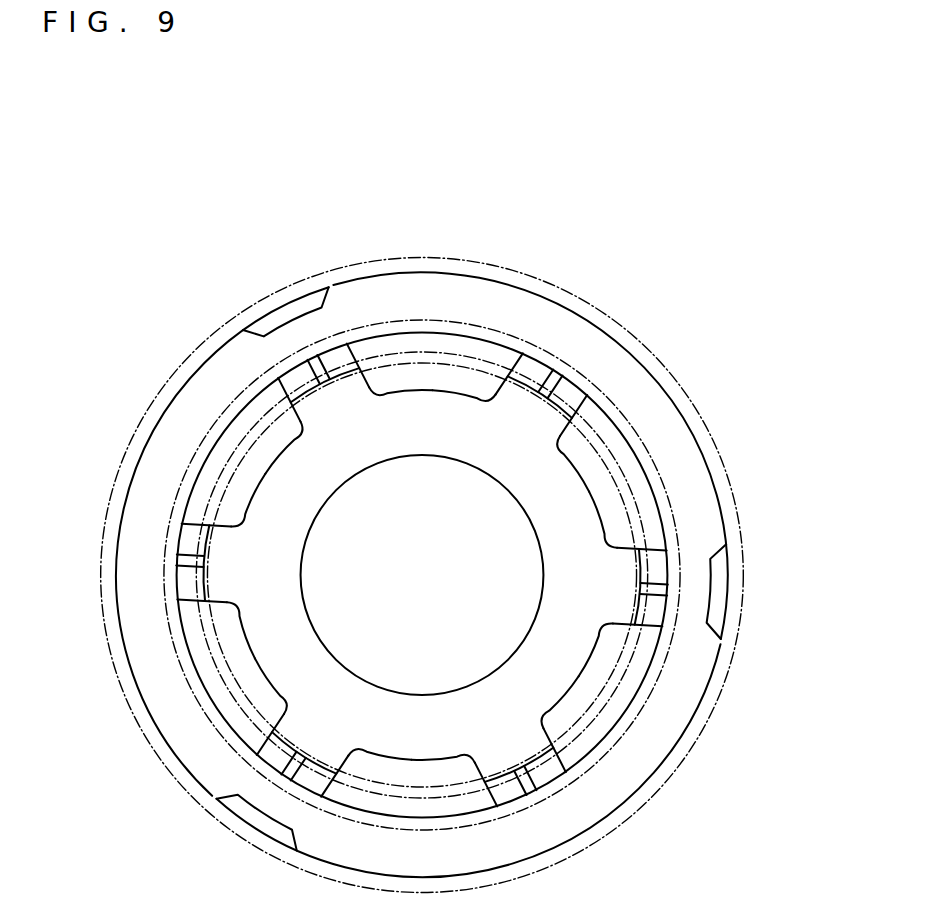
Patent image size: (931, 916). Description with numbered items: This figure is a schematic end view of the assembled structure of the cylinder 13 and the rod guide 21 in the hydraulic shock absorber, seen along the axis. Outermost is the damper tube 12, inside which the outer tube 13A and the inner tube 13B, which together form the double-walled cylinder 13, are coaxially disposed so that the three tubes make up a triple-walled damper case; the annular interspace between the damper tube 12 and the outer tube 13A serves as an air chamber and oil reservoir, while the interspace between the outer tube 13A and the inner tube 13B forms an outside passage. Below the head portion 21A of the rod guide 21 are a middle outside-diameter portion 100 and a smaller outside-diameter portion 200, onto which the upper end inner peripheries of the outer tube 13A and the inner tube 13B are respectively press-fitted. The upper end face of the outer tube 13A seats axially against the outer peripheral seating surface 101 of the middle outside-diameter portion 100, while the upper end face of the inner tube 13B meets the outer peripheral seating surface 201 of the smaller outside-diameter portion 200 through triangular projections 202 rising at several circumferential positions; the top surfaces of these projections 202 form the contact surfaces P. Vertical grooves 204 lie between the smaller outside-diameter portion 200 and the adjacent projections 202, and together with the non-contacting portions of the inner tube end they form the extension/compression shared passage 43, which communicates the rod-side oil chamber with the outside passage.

The damper tube 12 is at (268, 284).
The rod guide 21 is at (378, 557).
The head portion 21A is at (368, 272).
The cylinder 13 is at (425, 575).
The outer tube 13A is at (182, 495).
The inner tube 13B is at (207, 513).
The extension/compression shared passage 43 is at (498, 575).
The vertical grooves 204 is at (575, 467).
The outer peripheral seating surface 201 is at (653, 522).
The smaller outside-diameter portion 200 is at (663, 560).
The projections 202 is at (662, 575).
The contact surfaces P is at (662, 587).
The middle outside-diameter portion 100 is at (177, 620).
The outer peripheral seating surface 101 is at (162, 658).